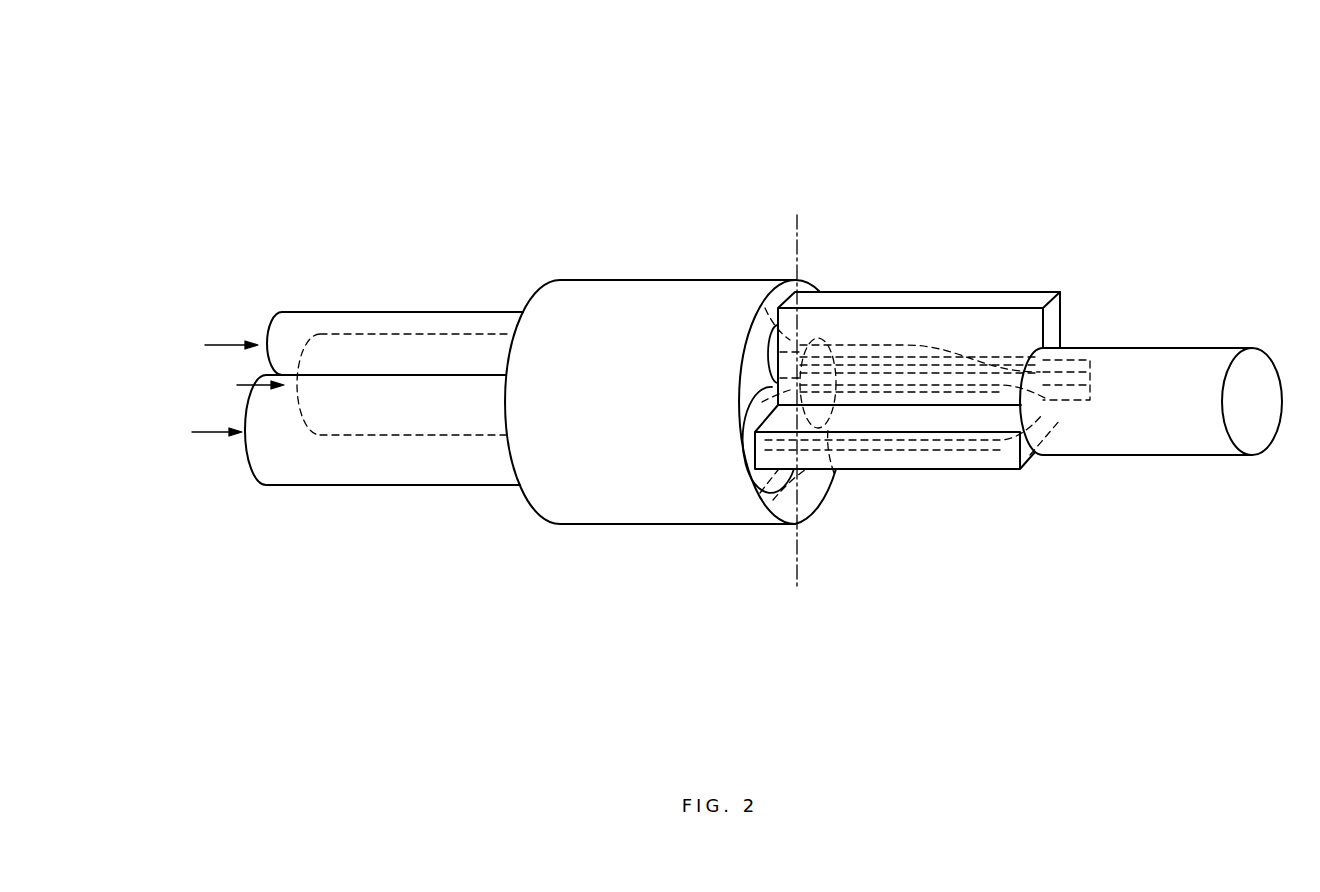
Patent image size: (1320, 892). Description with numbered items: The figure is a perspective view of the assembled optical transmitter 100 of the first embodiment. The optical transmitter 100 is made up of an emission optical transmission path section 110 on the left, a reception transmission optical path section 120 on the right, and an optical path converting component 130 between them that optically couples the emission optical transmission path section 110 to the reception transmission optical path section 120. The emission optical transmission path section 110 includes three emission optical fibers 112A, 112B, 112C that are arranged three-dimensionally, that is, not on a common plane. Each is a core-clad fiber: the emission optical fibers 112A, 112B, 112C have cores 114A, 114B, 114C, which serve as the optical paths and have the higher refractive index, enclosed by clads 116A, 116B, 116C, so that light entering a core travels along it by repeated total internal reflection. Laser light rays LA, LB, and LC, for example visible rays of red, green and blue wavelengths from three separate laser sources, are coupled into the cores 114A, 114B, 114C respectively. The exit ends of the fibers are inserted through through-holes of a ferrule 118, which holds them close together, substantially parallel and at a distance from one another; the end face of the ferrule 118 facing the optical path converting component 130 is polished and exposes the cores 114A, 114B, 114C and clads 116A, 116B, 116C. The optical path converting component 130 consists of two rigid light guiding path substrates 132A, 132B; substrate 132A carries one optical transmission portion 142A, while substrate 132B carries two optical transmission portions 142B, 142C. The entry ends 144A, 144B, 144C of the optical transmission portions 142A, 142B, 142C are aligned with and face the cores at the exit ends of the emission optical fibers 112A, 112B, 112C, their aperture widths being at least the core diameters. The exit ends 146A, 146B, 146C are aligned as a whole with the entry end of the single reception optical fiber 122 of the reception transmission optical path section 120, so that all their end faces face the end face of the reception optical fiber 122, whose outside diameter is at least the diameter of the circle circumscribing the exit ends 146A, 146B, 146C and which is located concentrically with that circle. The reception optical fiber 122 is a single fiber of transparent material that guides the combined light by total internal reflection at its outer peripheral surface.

The optical transmitter 100 is at (339, 166).
The emission optical transmission path section 110 is at (265, 655).
The emission optical fiber 112A is at (298, 327).
The emission optical fiber 112B is at (412, 333).
The emission optical fiber 112C is at (320, 470).
The ferrule 118 is at (645, 305).
The core 114A is at (765, 308).
The core 114B is at (762, 402).
The core 114C is at (760, 493).
The clad 116A is at (769, 350).
The clad 116B is at (776, 372).
The clad 116C is at (758, 450).
The optical path converting component 130 is at (1030, 655).
The rigid light guiding path substrate 132A is at (1018, 292).
The rigid light guiding path substrate 132B is at (990, 470).
The optical transmission portion 142A is at (900, 345).
The optical transmission portion 142B is at (932, 440).
The optical transmission portion 142C is at (898, 480).
The entry end 144A is at (820, 338).
The entry end 144B is at (834, 473).
The entry end 144C is at (773, 500).
The exit end 146A is at (1052, 385).
The exit end 146B is at (1092, 400).
The exit end 146C is at (1030, 455).
The reception transmission optical path section 120 is at (1045, 655).
The reception optical fiber 122 is at (1195, 358).